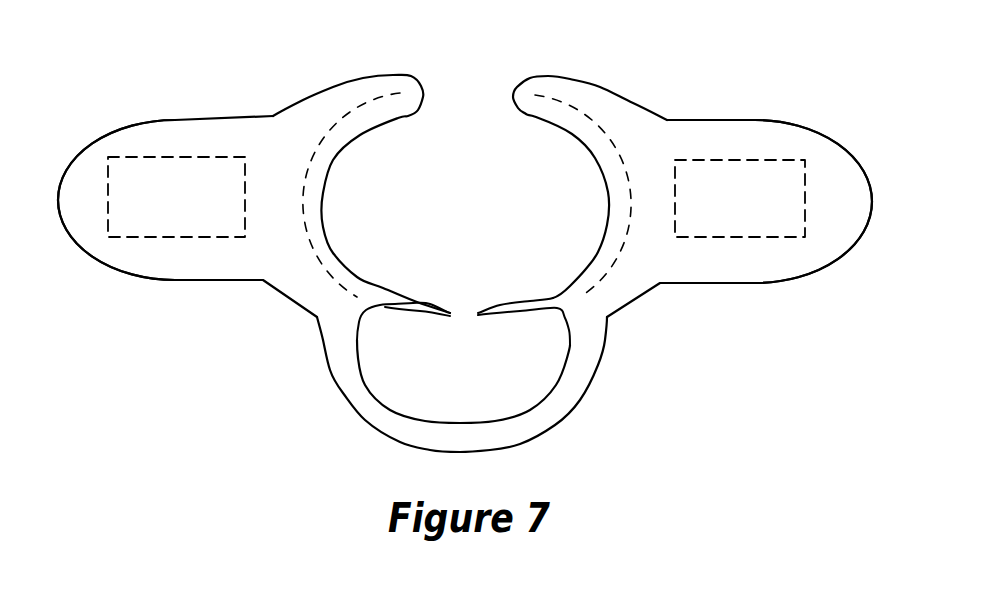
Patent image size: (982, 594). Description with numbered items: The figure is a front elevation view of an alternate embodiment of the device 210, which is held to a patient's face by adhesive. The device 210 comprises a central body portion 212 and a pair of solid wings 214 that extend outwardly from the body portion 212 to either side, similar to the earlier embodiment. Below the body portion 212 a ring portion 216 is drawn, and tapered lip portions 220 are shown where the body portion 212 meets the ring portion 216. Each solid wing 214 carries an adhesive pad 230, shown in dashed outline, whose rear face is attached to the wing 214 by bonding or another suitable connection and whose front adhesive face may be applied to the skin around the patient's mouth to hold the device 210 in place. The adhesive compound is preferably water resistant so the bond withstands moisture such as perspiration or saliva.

The device 210 is at (321, 47).
The body portion 212 is at (580, 90).
The solid wings 214 is at (183, 267).
The ring portion 216 is at (357, 397).
The tapered lip portions 220 is at (337, 277).
The adhesive pad 230 is at (180, 146).